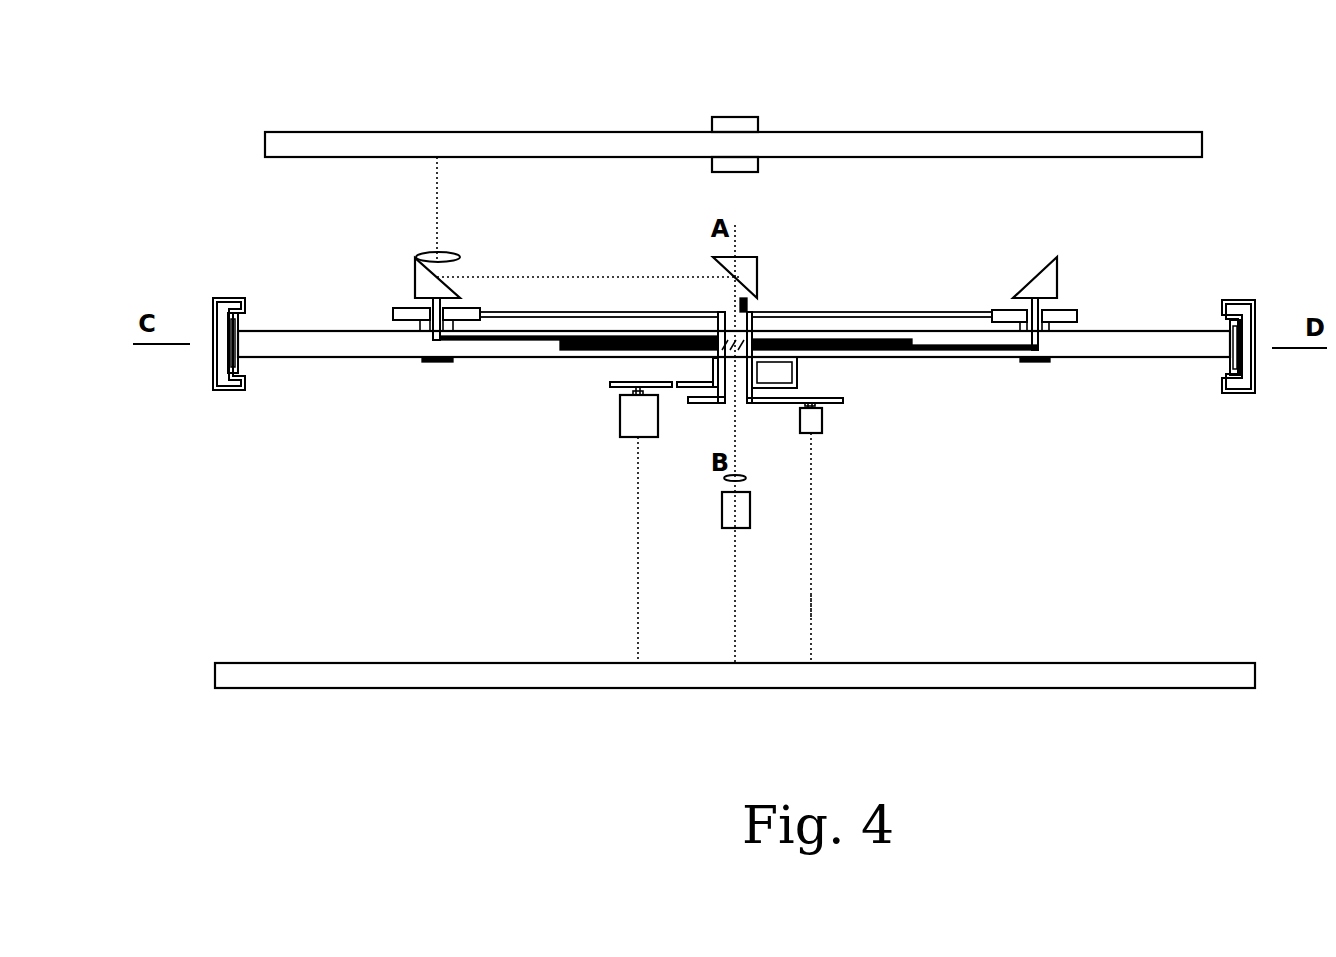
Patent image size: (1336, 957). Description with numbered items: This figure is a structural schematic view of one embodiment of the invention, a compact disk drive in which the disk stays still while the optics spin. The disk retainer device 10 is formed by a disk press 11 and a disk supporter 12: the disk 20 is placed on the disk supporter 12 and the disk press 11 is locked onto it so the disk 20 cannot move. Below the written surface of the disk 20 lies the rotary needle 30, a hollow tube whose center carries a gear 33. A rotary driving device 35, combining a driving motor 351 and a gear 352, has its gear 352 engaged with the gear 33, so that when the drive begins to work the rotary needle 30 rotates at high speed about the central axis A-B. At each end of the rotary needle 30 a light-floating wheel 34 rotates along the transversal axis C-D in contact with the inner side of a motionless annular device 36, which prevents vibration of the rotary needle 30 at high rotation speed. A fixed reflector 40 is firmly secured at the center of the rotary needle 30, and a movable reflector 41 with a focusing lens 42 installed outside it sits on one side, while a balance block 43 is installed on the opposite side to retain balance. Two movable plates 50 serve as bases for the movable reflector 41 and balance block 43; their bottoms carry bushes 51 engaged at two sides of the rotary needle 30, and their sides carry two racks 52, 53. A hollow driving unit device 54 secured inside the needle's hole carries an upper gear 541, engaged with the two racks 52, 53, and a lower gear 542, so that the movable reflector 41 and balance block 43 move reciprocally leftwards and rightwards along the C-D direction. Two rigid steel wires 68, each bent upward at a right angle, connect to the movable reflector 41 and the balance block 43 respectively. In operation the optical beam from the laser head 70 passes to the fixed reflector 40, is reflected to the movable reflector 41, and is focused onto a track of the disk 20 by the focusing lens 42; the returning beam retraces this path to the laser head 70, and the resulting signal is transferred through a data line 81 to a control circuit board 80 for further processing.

The disk retainer device 10 is at (905, 127).
The disk press 11 is at (732, 123).
The disk supporter 12 is at (738, 163).
The disk 20 is at (466, 132).
The rotary needle 30 is at (367, 352).
The gear 33 is at (688, 392).
The light-floating wheel 34 is at (232, 318).
The rotary driving device 35 is at (604, 447).
The driving motor 351 is at (637, 422).
The gear 352 is at (600, 387).
The annular device 36 is at (232, 385).
The fixed reflector 40 is at (745, 270).
The movable reflector 41 is at (423, 277).
The focusing lens 42 is at (430, 257).
The balance block 43 is at (1042, 278).
The movable plate 50 is at (415, 318).
The bushes 51 is at (432, 362).
The rack 52 is at (552, 310).
The rack 53 is at (867, 310).
The hollow driving unit device 54 is at (753, 400).
The upper gear 541 is at (697, 310).
The lower gear 542 is at (713, 402).
The steel wire 68 is at (470, 342).
The laser head 70 is at (748, 510).
The control circuit board 80 is at (298, 666).
The data line 81 is at (812, 606).